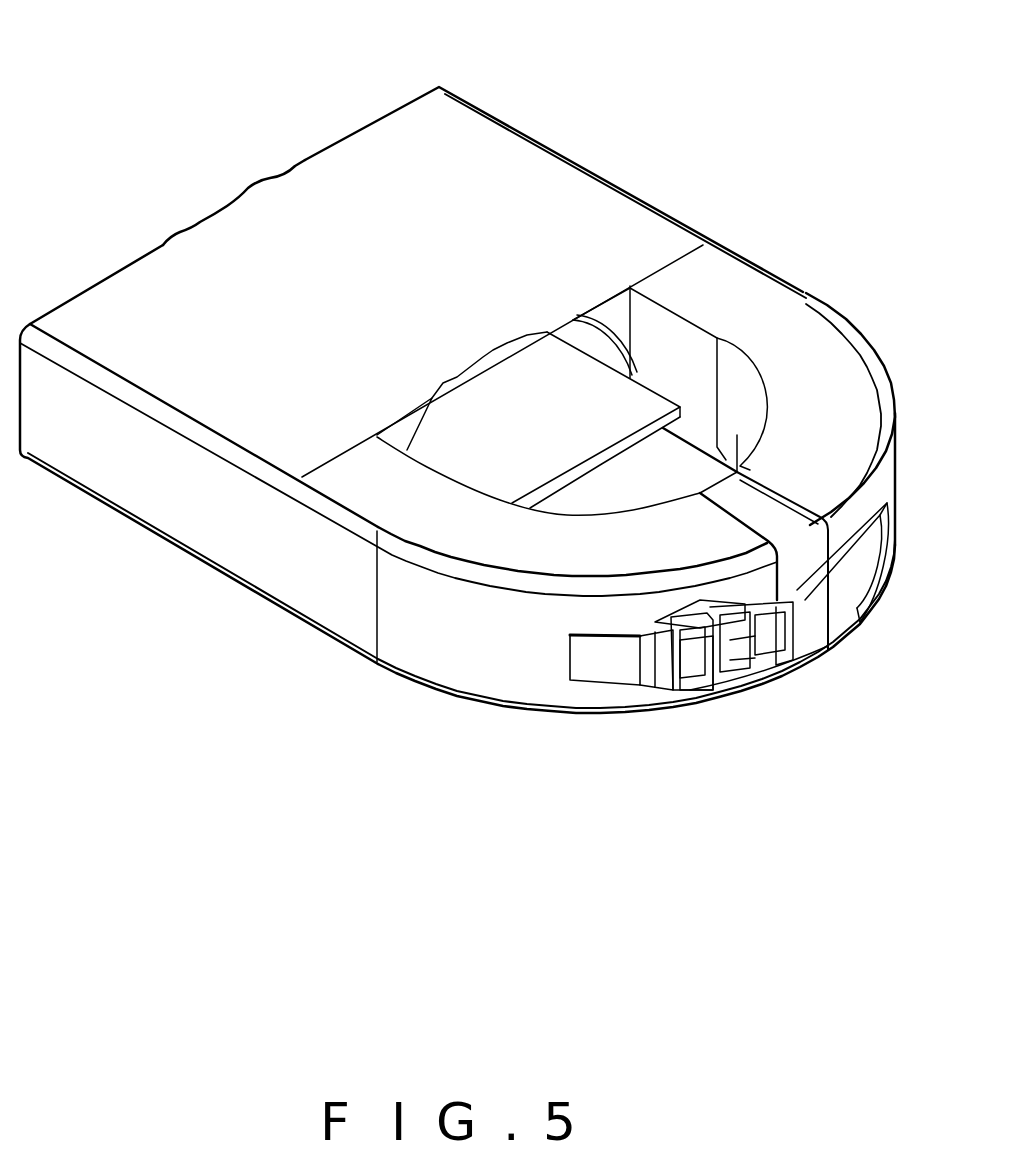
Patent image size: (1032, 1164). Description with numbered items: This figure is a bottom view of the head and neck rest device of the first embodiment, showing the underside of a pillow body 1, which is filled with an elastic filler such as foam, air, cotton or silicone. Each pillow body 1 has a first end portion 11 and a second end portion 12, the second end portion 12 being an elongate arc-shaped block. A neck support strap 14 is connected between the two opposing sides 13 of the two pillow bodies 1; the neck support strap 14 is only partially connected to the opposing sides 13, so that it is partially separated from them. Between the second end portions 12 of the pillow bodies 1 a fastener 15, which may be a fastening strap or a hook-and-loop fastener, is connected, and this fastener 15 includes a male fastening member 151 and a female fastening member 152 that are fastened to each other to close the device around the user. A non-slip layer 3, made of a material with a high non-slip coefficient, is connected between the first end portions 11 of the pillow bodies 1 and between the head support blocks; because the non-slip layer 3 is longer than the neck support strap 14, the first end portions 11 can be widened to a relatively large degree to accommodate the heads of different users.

The pillow body 1 is at (322, 502).
The non-slip layer 3 is at (267, 220).
The first end portion 11 is at (385, 114).
The second end portion 12 is at (833, 418).
The opposing side 13 is at (668, 353).
The neck support strap 14 is at (508, 455).
The fastener 15 is at (760, 775).
The male fastening member 151 is at (688, 628).
The female fastening member 152 is at (732, 647).